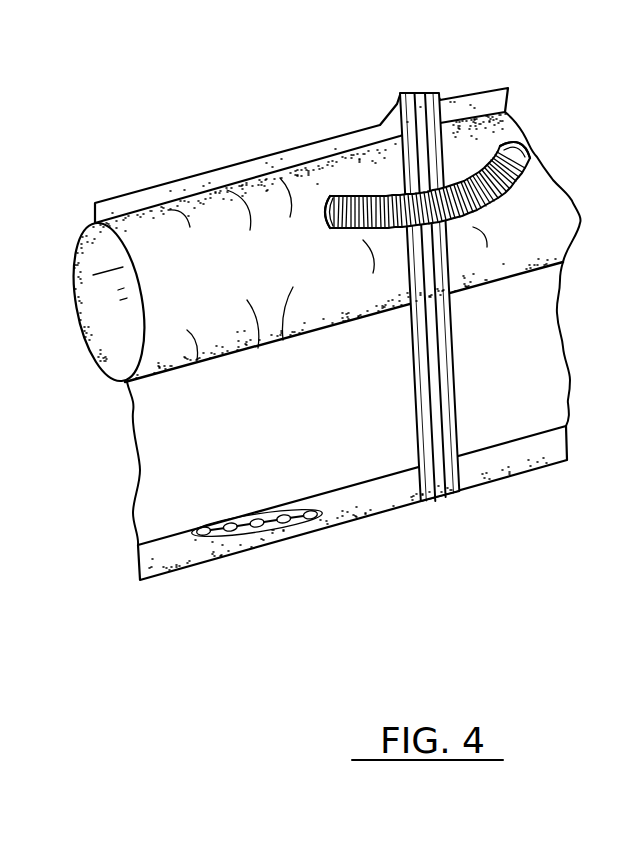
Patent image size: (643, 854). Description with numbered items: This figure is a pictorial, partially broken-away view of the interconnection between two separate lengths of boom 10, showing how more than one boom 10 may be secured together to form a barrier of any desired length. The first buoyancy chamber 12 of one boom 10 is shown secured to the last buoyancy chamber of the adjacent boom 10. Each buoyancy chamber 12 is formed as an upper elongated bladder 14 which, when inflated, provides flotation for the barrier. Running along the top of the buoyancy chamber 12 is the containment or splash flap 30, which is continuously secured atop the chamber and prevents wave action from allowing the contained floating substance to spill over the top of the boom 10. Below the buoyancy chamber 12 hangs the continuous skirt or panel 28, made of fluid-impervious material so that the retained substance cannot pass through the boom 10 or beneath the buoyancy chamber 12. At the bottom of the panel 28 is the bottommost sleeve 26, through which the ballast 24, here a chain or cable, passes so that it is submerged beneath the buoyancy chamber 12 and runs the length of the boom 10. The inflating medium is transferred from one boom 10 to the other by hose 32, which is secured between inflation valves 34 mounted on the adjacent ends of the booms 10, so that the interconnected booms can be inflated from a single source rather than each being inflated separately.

The boom 10 is at (351, 309).
The buoyancy chamber 12 is at (234, 280).
The bladder 14 is at (522, 273).
The ballast 24 is at (226, 533).
The bottommost sleeve 26 is at (355, 520).
The panel 28 is at (358, 420).
The splash flap 30 is at (330, 133).
The hose 32 is at (380, 228).
The inflation valve 34 is at (325, 200).